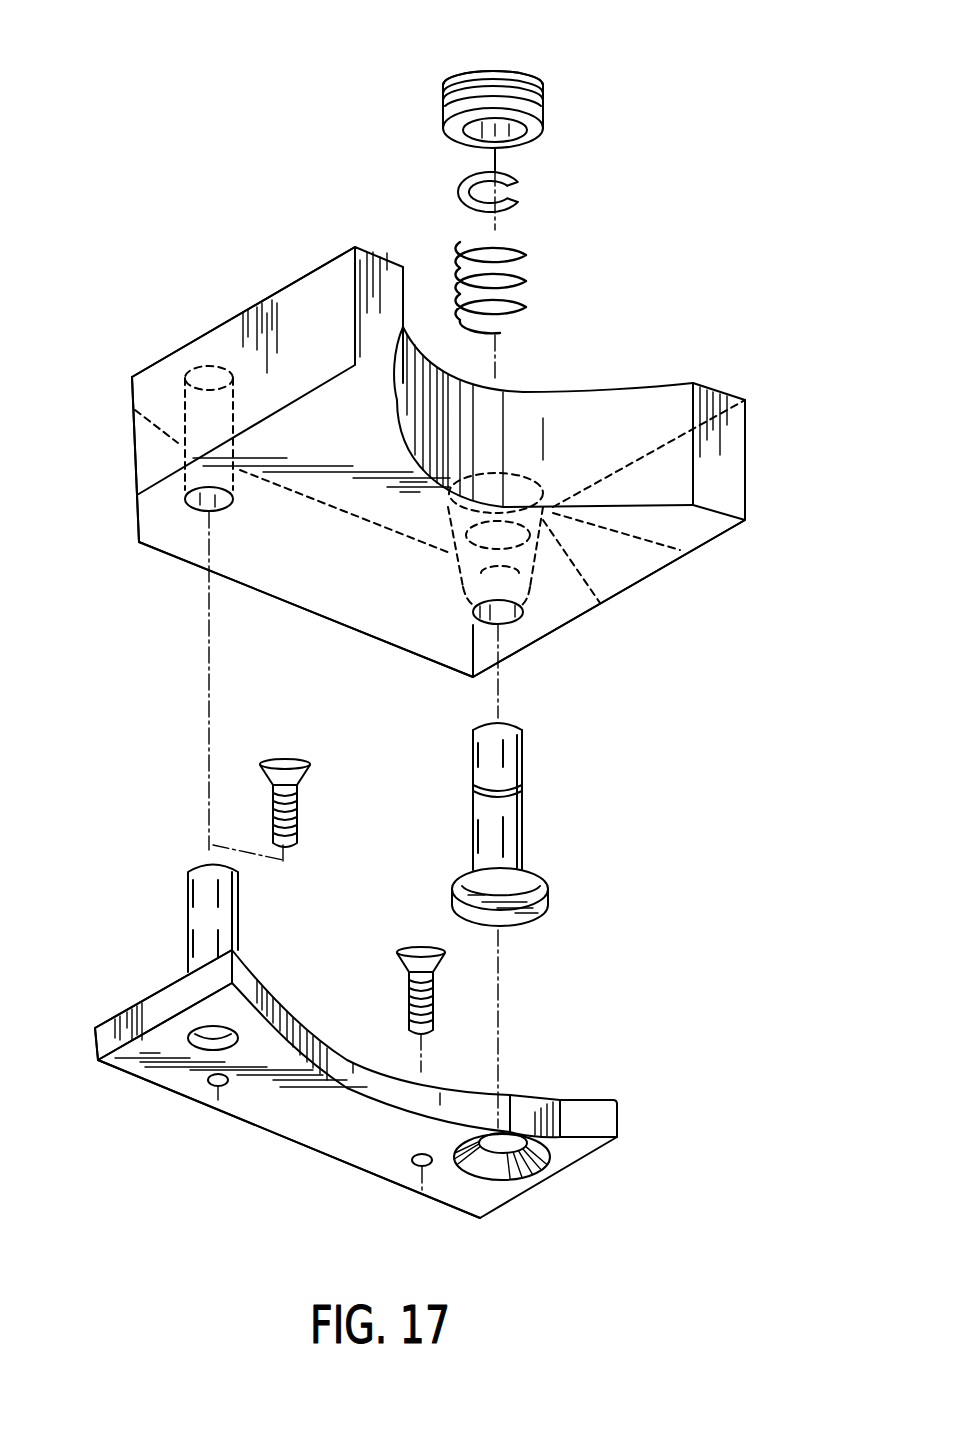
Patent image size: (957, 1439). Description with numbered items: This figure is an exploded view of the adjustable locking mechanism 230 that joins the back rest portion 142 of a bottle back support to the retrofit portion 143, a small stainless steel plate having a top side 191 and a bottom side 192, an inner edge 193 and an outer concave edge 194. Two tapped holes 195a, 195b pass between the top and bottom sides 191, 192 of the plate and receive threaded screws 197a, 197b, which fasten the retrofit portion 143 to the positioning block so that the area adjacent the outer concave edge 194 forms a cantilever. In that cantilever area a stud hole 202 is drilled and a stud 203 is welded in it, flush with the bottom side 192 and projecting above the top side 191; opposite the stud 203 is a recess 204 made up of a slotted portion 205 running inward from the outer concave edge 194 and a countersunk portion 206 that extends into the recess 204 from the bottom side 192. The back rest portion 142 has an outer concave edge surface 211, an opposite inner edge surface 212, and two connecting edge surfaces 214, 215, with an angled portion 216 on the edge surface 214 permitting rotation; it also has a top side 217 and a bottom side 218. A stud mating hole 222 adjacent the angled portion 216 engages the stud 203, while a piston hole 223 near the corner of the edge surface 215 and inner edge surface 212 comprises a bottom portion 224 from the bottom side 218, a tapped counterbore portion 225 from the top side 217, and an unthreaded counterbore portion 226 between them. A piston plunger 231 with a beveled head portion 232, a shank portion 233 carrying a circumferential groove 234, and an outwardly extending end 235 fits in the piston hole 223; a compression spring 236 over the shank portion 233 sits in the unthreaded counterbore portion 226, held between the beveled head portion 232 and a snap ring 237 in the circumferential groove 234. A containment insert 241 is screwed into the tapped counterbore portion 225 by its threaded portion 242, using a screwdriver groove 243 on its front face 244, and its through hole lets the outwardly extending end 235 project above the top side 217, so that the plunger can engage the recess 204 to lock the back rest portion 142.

The back rest portion 142 is at (313, 264).
The retrofit portion 143 is at (283, 1150).
The top side 191 is at (172, 978).
The bottom side 192 is at (360, 1140).
The inner edge 193 is at (237, 1117).
The outer concave edge 194 is at (447, 1092).
The tapped hole 195a is at (210, 1084).
The tapped hole 195b is at (421, 1166).
The threaded screw 197a is at (297, 813).
The threaded screw 197b is at (402, 992).
The stud hole 202 is at (200, 1033).
The stud 203 is at (197, 897).
The recess 204 is at (533, 1100).
The slotted portion 205 is at (617, 1114).
The countersunk portion 206 is at (540, 1167).
The outer concave edge surface 211 is at (533, 403).
The inner edge surface 212 is at (277, 598).
The edge surface 214 is at (287, 303).
The edge surface 215 is at (650, 578).
The angled portion 216 is at (138, 512).
The top side 217 is at (203, 337).
The bottom side 218 is at (357, 613).
The stud mating hole 222 is at (198, 512).
The piston hole 223 is at (537, 487).
The bottom portion 224 is at (512, 621).
The tapped counterbore portion 225 is at (680, 550).
The unthreaded counterbore portion 226 is at (600, 603).
The adjustable locking mechanism 230 is at (668, 158).
The piston plunger 231 is at (560, 904).
The beveled head portion 232 is at (548, 895).
The shank portion 233 is at (508, 768).
The circumferential groove 234 is at (517, 790).
The outwardly extending end 235 is at (505, 722).
The compression spring 236 is at (527, 277).
The snap ring 237 is at (523, 203).
The containment insert 241 is at (520, 79).
The threaded portion 242 is at (540, 113).
The screwdriver groove 243 is at (458, 92).
The front face 244 is at (512, 73).